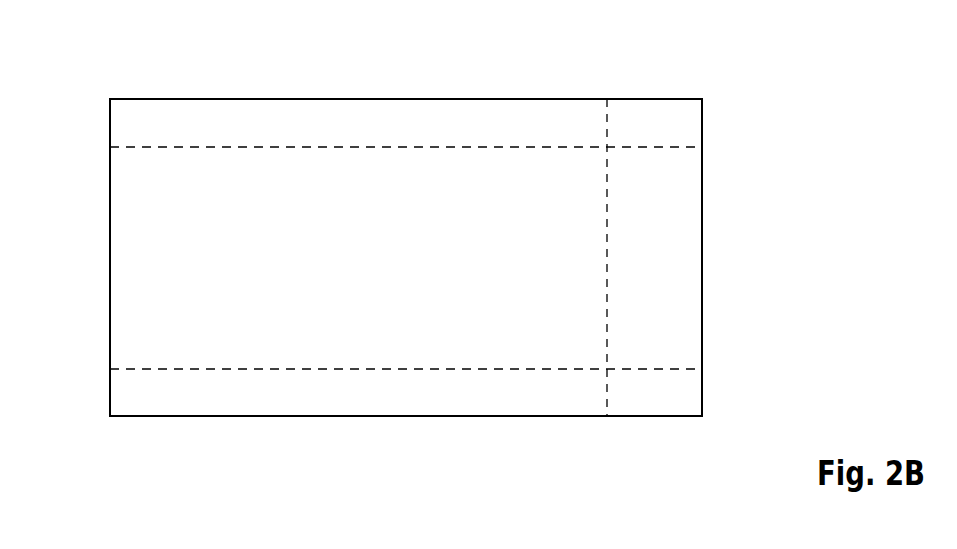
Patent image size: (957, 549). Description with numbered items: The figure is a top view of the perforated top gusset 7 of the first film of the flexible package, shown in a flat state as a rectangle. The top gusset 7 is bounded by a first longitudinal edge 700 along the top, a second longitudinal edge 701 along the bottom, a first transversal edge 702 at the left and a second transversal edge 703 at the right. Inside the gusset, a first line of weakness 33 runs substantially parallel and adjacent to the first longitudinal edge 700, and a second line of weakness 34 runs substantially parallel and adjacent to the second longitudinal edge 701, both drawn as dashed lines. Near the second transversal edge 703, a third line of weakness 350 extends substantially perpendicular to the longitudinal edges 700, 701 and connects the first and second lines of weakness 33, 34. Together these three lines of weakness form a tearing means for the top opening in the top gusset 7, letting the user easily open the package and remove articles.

The top gusset 7 is at (575, 167).
The first line of weakness 33 is at (368, 147).
The second line of weakness 34 is at (307, 369).
The third line of weakness 350 is at (608, 196).
The first longitudinal edge 700 is at (350, 99).
The second longitudinal edge 701 is at (368, 417).
The first transversal edge 702 is at (110, 248).
The second transversal edge 703 is at (703, 237).